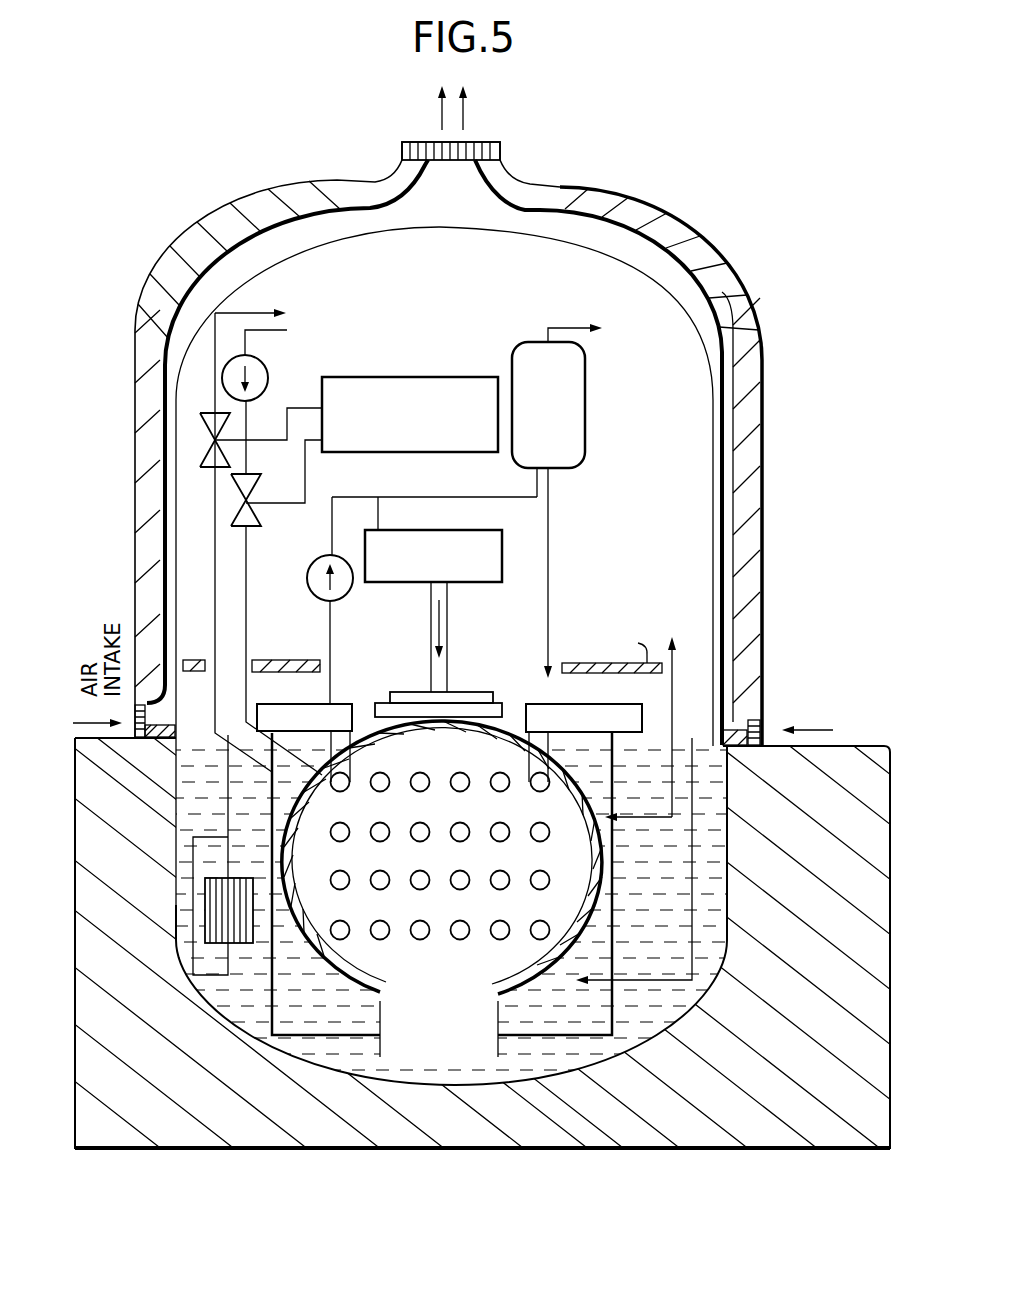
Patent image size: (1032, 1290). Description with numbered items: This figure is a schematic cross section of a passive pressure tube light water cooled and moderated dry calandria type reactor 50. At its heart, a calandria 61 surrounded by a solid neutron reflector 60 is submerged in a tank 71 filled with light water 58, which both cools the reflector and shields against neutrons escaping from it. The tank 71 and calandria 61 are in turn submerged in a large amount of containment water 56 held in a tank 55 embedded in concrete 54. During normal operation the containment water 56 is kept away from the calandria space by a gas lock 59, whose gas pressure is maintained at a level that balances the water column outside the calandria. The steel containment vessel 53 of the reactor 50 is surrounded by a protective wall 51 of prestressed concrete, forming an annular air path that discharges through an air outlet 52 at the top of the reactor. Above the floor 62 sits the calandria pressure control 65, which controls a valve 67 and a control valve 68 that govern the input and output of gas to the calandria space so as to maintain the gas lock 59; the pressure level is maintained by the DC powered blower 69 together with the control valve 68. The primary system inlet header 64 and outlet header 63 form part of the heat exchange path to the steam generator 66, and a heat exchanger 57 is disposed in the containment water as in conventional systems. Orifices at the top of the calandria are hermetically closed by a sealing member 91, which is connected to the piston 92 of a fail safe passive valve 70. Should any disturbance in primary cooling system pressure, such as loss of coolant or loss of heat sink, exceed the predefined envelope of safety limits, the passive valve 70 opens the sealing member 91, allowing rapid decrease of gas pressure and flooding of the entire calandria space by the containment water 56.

The dry calandria type reactor 50 is at (718, 198).
The protective wall 51 is at (616, 190).
The air outlet 52 is at (465, 141).
The steel containment vessel 53 is at (450, 228).
The concrete 54 is at (408, 1148).
The tank 55 is at (712, 874).
The containment water 56 is at (742, 727).
The heat exchanger 57 is at (203, 913).
The light water 58 is at (90, 728).
The gas lock 59 is at (451, 1031).
The solid neutron reflector 60 is at (296, 878).
The calandria 61 is at (451, 756).
The floor 62 is at (597, 675).
The outlet header 63 is at (310, 704).
The inlet header 64 is at (648, 695).
The calandria pressure control 65 is at (452, 455).
The steam generator 66 is at (572, 420).
The valve 67 is at (208, 457).
The control valve 68 is at (252, 497).
The DC powered blower 69 is at (267, 388).
The fail safe passive valve 70 is at (446, 566).
The tank 71 is at (613, 765).
The sealing member 91 is at (410, 692).
The piston 92 is at (447, 665).